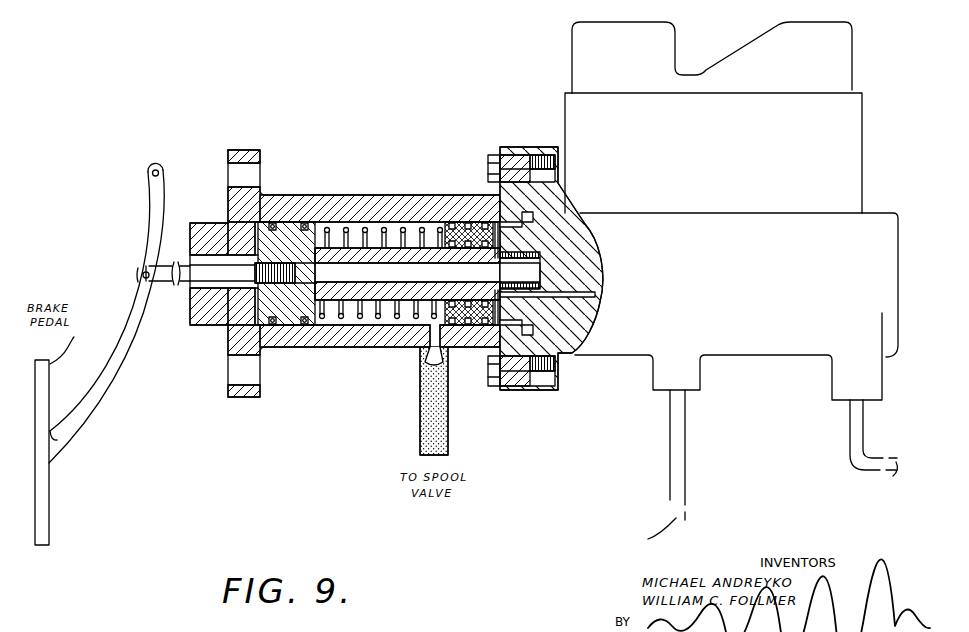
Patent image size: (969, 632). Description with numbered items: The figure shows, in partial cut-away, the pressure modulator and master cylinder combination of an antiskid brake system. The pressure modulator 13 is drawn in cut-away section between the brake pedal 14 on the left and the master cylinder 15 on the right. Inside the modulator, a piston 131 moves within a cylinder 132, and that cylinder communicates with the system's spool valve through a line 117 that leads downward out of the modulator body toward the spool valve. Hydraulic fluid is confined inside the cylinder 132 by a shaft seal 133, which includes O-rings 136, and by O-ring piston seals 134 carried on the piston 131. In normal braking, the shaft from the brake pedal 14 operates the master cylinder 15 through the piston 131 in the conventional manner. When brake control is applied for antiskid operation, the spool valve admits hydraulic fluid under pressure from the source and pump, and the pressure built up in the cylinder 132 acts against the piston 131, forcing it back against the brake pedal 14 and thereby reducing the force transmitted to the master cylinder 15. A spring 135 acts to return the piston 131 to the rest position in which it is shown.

The pressure modulator 13 is at (376, 184).
The brake pedal 14 is at (97, 396).
The master cylinder 15 is at (628, 362).
The line 117 is at (448, 420).
The piston 131 is at (337, 290).
The cylinder 132 is at (355, 222).
The shaft seal 133 is at (448, 313).
The O-ring piston seals 134 is at (272, 222).
The spring 135 is at (400, 221).
The O-rings 136 is at (484, 229).